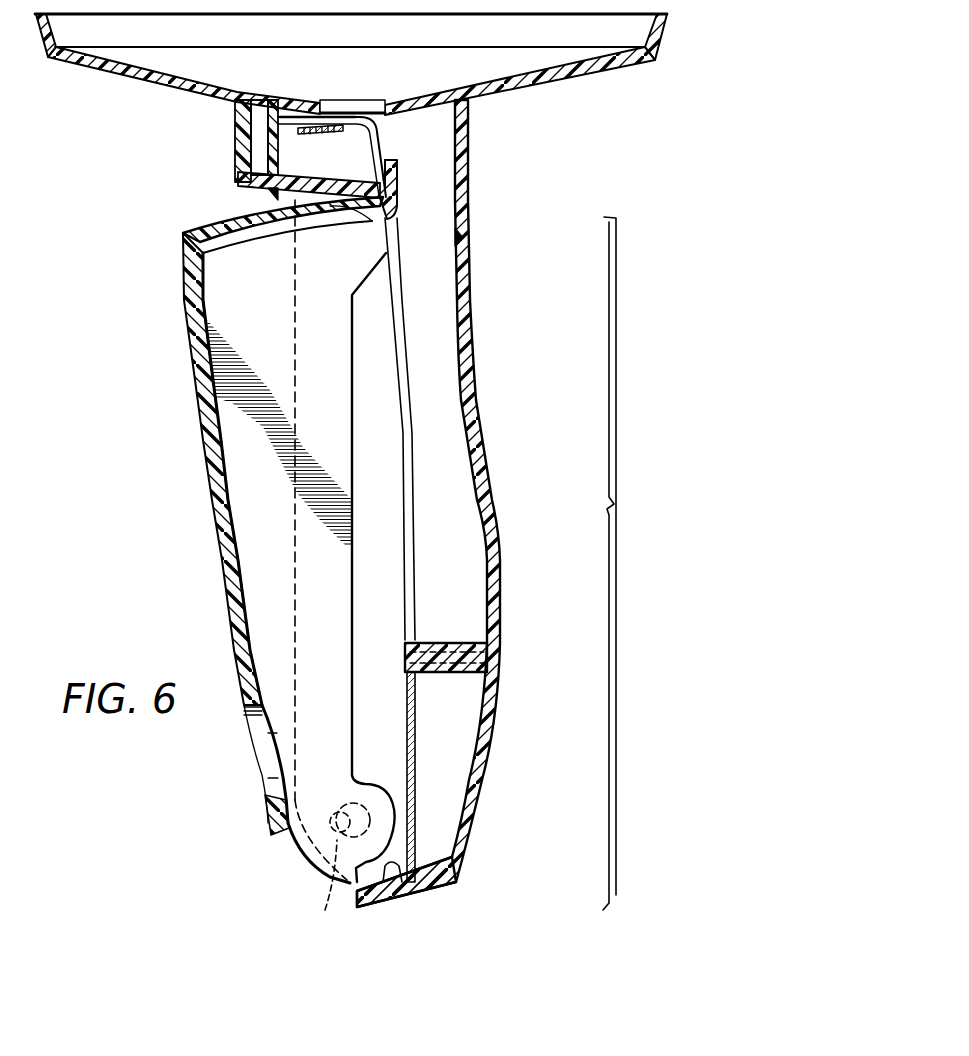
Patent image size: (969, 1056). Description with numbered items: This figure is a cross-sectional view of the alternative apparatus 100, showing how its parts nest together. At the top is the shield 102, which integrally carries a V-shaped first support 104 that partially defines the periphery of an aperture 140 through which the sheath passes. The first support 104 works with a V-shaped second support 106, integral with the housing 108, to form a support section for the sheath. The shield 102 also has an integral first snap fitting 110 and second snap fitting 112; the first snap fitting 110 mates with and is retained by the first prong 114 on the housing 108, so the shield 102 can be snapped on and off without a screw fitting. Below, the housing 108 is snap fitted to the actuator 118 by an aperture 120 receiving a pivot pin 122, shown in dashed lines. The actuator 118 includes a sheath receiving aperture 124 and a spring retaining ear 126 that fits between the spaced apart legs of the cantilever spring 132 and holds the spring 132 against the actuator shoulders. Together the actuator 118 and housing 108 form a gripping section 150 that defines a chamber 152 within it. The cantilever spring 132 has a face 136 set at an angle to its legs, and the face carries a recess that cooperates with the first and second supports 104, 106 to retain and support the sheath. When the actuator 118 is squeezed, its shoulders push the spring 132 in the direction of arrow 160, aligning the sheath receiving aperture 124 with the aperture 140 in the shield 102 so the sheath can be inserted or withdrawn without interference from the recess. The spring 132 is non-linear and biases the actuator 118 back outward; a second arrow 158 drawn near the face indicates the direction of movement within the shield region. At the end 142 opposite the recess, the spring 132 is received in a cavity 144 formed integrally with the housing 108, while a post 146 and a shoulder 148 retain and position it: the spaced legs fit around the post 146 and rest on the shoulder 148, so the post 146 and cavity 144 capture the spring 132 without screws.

The apparatus 100 is at (72, 360).
The shield 102 is at (606, 72).
The first support 104 is at (340, 105).
The second support 106 is at (300, 211).
The housing 108 is at (500, 545).
The first snap fitting 110 is at (470, 184).
The second snap fitting 112 is at (245, 158).
The first prong 114 is at (455, 230).
The actuator 118 is at (196, 452).
The aperture 120 is at (337, 830).
The pivot pin 122 is at (314, 888).
The sheath receiving aperture 124 is at (337, 223).
The spring retaining ear 126 is at (398, 182).
The cantilever spring 132 is at (412, 470).
The face 136 is at (322, 134).
The aperture 140 is at (362, 108).
The end 142 is at (425, 880).
The cavity 144 is at (392, 884).
The post 146 is at (405, 652).
The shoulder 148 is at (440, 645).
The gripping section 150 is at (635, 563).
The chamber 152 is at (338, 618).
The direction arrow 158 is at (433, 133).
The arrow 160 is at (415, 310).